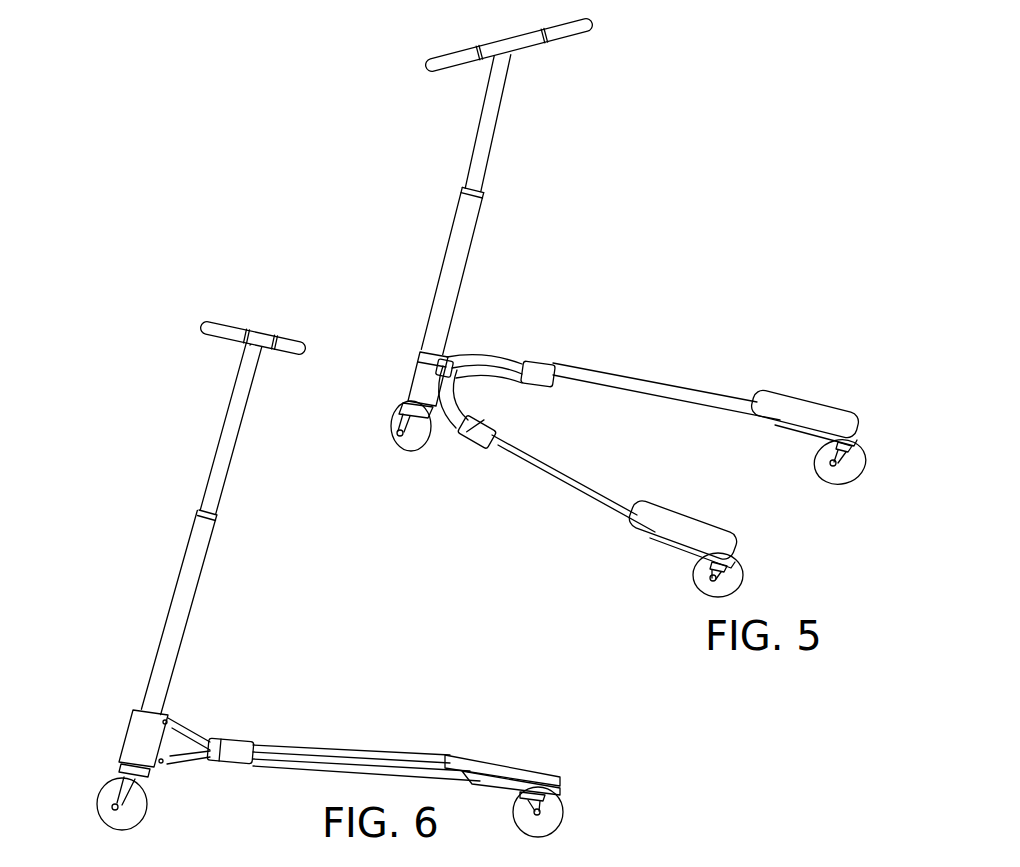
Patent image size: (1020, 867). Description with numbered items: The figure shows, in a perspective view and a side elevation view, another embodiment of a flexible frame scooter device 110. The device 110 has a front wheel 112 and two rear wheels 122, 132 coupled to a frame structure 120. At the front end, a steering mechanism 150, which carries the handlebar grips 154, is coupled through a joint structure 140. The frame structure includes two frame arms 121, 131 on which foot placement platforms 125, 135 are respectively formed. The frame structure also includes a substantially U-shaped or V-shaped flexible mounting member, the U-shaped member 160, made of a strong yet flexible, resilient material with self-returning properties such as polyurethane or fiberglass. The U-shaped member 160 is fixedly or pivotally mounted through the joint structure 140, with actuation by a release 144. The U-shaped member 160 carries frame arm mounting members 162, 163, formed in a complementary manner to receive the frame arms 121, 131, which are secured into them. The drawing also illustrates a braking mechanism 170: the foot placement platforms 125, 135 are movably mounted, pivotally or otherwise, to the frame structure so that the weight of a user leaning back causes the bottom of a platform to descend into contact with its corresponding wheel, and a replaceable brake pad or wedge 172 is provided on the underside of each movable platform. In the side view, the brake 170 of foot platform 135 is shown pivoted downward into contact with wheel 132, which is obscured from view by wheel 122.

In FIG. 5, the flexible frame scooter device 110 is at (627, 220).
In FIG. 6, the flexible frame scooter device 110 is at (299, 546).
In FIG. 5, the front wheel 112 is at (417, 446).
In FIG. 6, the front wheel 112 is at (137, 812).
In FIG. 5, the frame structure 120 is at (652, 317).
In FIG. 6, the frame structure 120 is at (332, 644).
In FIG. 5, the frame arm 121 is at (564, 475).
In FIG. 6, the frame arm 121 is at (333, 749).
In FIG. 5, the rear wheel 122 is at (737, 580).
In FIG. 6, the rear wheel 122 is at (553, 822).
In FIG. 5, the foot placement platform 125 is at (692, 528).
In FIG. 6, the foot placement platform 125 is at (485, 768).
In FIG. 5, the frame arm 131 is at (643, 380).
In FIG. 5, the rear wheel 132 is at (850, 470).
In FIG. 5, the foot placement platform 135 is at (812, 410).
In FIG. 6, the foot placement platform 135 is at (468, 757).
In FIG. 5, the joint structure 140 is at (404, 359).
In FIG. 6, the joint structure 140 is at (122, 722).
In FIG. 6, the release 144 is at (170, 768).
In FIG. 5, the steering mechanism 150 is at (572, 127).
In FIG. 6, the steering mechanism 150 is at (272, 441).
In FIG. 5, the handlebar grip 154 is at (457, 67).
In FIG. 6, the handlebar grip 154 is at (230, 340).
In FIG. 5, the U-shaped member 160 is at (480, 388).
In FIG. 6, the U-shaped member 160 is at (196, 727).
In FIG. 5, the frame arm mounting member 162 is at (497, 432).
In FIG. 6, the frame arm mounting member 162 is at (230, 751).
In FIG. 5, the frame arm mounting member 163 is at (565, 368).
In FIG. 5, the braking mechanism 170 is at (807, 388).
In FIG. 6, the braking mechanism 170 is at (544, 759).
In FIG. 5, the brake pad 172 is at (853, 447).